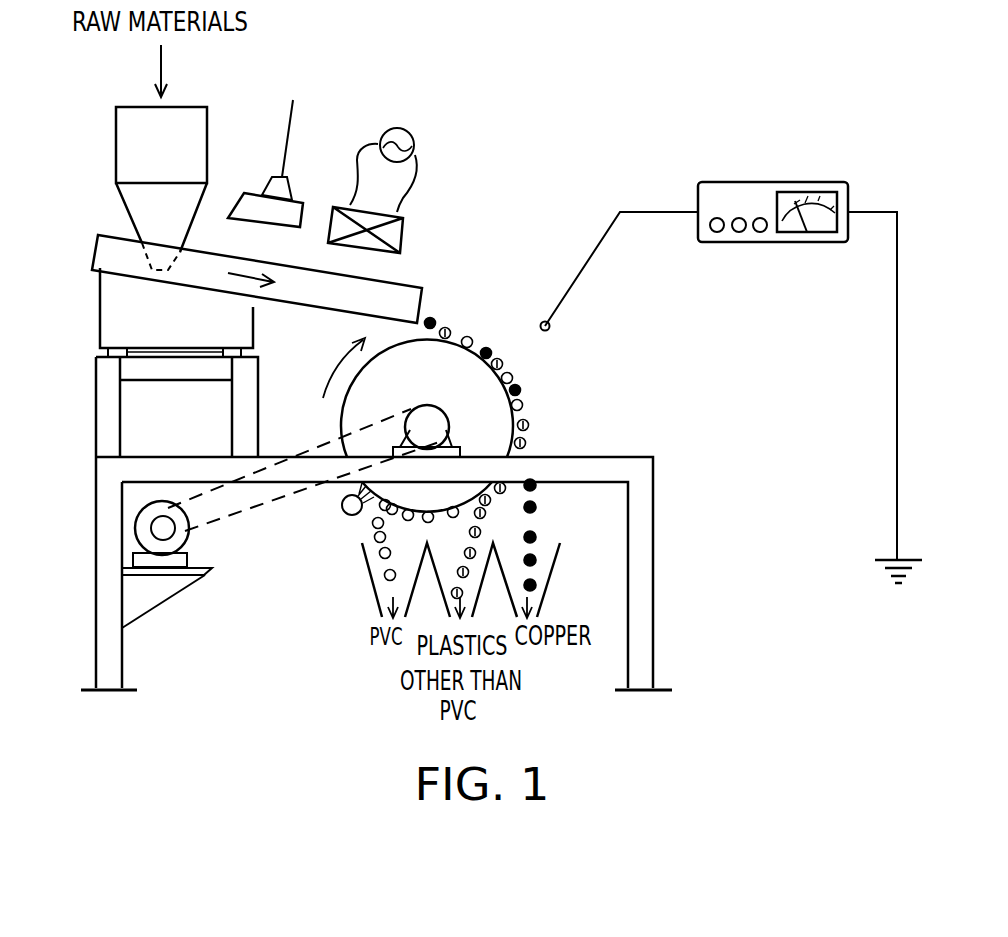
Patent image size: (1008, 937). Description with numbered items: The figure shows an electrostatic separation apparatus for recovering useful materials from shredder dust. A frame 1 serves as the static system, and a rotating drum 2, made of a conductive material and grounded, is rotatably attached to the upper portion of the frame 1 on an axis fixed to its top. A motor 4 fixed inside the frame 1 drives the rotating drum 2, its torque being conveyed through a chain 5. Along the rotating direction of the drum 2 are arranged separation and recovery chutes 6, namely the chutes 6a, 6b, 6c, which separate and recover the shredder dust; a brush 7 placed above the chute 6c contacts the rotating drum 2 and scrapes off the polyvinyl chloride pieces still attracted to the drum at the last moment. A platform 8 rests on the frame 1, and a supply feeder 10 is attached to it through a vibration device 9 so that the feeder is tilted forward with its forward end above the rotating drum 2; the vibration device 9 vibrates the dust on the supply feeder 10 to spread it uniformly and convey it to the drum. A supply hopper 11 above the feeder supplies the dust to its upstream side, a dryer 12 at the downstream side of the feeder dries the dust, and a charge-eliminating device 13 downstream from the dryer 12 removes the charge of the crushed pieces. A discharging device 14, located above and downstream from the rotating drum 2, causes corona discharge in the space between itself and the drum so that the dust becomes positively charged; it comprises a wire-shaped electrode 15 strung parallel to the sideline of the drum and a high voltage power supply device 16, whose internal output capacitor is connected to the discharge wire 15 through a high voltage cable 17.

The frame 1 is at (653, 610).
The rotating drum 2 is at (522, 418).
The motor 4 is at (133, 530).
The chain 5 is at (243, 516).
The separation and recovery chutes 6 is at (458, 567).
The separation and recovery chute 6a is at (554, 573).
The separation and recovery chute 6b is at (478, 597).
The separation and recovery chute 6c is at (373, 592).
The brush 7 is at (342, 512).
The platform 8 is at (96, 413).
The vibration device 9 is at (100, 318).
The supply feeder 10 is at (96, 255).
The supply hopper 11 is at (116, 140).
The dryer 12 is at (282, 152).
The charge-eliminating device 13 is at (403, 240).
The discharging device 14 is at (732, 311).
The electrode (discharge wire) 15 is at (551, 326).
The high voltage power supply device 16 is at (748, 182).
The high voltage cable 17 is at (585, 268).